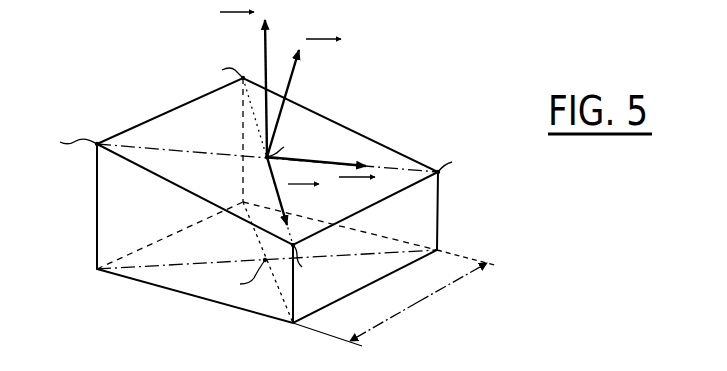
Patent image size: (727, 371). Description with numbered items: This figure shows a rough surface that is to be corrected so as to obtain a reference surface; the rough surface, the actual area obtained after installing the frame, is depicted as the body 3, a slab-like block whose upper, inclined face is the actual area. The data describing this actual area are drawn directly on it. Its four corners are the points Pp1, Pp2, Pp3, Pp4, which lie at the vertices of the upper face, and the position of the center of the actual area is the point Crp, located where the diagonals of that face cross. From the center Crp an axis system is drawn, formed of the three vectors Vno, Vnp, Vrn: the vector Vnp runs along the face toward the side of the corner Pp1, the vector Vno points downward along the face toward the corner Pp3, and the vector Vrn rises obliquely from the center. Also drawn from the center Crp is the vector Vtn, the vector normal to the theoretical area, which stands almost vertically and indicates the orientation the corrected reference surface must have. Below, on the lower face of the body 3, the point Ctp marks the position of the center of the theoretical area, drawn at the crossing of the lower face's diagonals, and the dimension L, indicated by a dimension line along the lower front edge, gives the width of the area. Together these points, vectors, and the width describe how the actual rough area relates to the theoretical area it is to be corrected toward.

The parallelepiped plate element 3 is at (264, 179).
The corner Pp1 is at (467, 155).
The corner Pp2 is at (65, 126).
The corner Pp3 is at (317, 268).
The corner Pp4 is at (215, 66).
The center of the actual area Crp is at (291, 144).
The center of the theoretical area Ctp is at (233, 278).
The width of the area L is at (394, 298).
The vector normal to the theoretical area Vtn is at (243, 84).
The vector of the axis system Vrn is at (304, 98).
The vector of the axis system Vnp is at (322, 180).
The vector of the axis system Vno is at (296, 191).